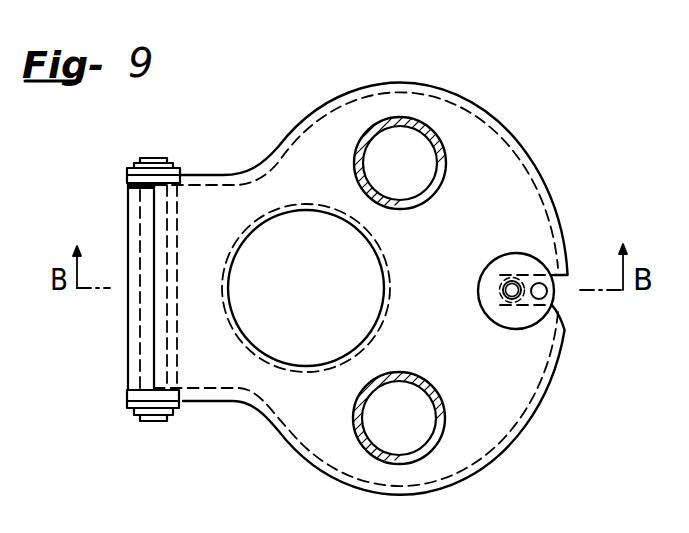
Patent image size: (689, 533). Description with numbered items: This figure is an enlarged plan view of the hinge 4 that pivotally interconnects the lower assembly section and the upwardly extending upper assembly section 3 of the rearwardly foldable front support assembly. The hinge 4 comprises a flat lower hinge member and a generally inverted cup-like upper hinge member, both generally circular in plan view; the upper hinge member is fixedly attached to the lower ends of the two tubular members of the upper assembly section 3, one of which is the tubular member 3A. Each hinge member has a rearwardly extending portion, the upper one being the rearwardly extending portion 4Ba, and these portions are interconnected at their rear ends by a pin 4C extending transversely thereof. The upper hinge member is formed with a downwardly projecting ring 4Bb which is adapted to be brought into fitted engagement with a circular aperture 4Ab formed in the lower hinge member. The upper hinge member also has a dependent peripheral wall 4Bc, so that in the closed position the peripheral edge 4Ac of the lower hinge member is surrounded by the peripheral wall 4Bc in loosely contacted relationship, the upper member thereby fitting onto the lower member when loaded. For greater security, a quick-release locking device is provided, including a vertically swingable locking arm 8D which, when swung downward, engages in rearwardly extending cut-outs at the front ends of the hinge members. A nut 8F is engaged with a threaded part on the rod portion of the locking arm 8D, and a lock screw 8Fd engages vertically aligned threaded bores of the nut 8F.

The upper assembly section 3 is at (443, 148).
The tubular member 3A is at (353, 423).
The hinge 4 is at (313, 105).
The circular aperture 4Ab is at (243, 228).
The peripheral edge 4Ac is at (533, 410).
The rearwardly extending portion 4Ba is at (185, 347).
The downwardly projecting ring 4Bb is at (280, 212).
The dependent peripheral wall 4Bc is at (497, 457).
The pin 4C is at (145, 302).
The locking arm 8D is at (515, 289).
The nut 8F is at (521, 253).
The lock screw 8Fd is at (546, 294).